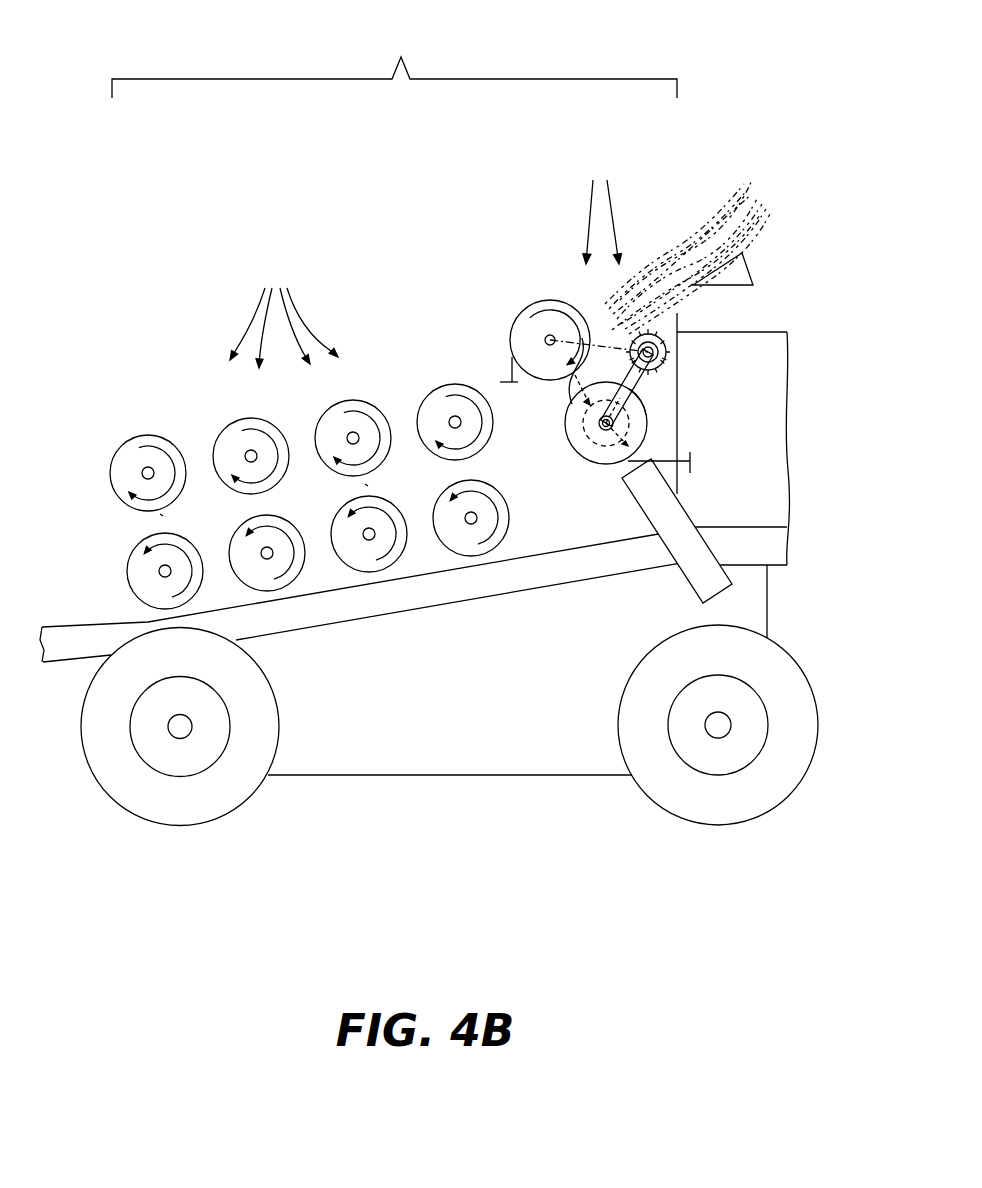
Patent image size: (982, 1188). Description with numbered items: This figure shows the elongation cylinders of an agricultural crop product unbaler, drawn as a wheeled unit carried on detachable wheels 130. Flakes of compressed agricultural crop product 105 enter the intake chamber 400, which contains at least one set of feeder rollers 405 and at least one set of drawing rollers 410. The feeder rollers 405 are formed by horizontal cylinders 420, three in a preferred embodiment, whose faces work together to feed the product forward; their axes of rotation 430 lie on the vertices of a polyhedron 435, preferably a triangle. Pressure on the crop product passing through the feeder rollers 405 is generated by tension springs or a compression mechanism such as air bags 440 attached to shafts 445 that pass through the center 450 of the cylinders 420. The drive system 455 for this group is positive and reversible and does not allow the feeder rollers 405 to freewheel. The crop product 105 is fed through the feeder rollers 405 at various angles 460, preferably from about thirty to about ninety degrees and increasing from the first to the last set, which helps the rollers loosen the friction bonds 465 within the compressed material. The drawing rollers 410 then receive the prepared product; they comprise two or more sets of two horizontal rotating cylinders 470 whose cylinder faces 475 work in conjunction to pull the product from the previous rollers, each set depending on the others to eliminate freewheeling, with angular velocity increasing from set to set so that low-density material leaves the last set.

The intake chamber 400 is at (394, 60).
The feeder rollers 405 is at (602, 205).
The drawing rollers 410 is at (284, 313).
The agricultural crop product 105 is at (700, 243).
The friction bonds 465 is at (770, 205).
The angles 460 is at (752, 268).
The drive system 455 is at (675, 389).
The shafts 445 is at (690, 456).
The air bags 440 is at (690, 518).
The horizontal cylinders 420 is at (668, 352).
The axes of rotation 430 is at (660, 343).
The polyhedron 435 is at (648, 400).
The center 450 is at (605, 430).
The horizontal rotating cylinders 470 is at (232, 427).
The cylinder faces 475 is at (240, 500).
The detachable wheels 130 is at (182, 812).